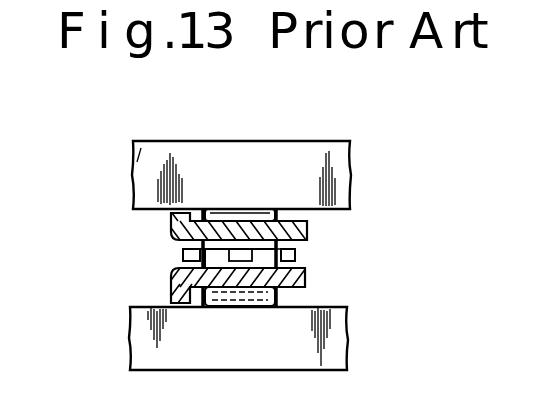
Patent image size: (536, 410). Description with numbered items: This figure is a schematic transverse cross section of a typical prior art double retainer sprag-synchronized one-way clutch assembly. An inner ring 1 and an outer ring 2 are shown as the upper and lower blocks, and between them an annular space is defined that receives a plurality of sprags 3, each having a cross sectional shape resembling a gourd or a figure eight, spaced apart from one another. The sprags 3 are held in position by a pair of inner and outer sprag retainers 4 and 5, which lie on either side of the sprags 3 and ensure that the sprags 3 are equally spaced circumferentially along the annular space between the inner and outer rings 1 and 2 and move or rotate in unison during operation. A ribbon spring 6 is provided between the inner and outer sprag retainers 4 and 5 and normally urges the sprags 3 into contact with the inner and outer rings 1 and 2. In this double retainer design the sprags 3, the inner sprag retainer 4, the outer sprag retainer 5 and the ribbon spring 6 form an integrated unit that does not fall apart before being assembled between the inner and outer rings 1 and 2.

The inner ring 1 is at (328, 356).
The outer ring 2 is at (332, 171).
The sprag 3 is at (208, 264).
The inner sprag retainer 4 is at (305, 279).
The outer sprag retainer 5 is at (307, 229).
The ribbon spring 6 is at (296, 256).